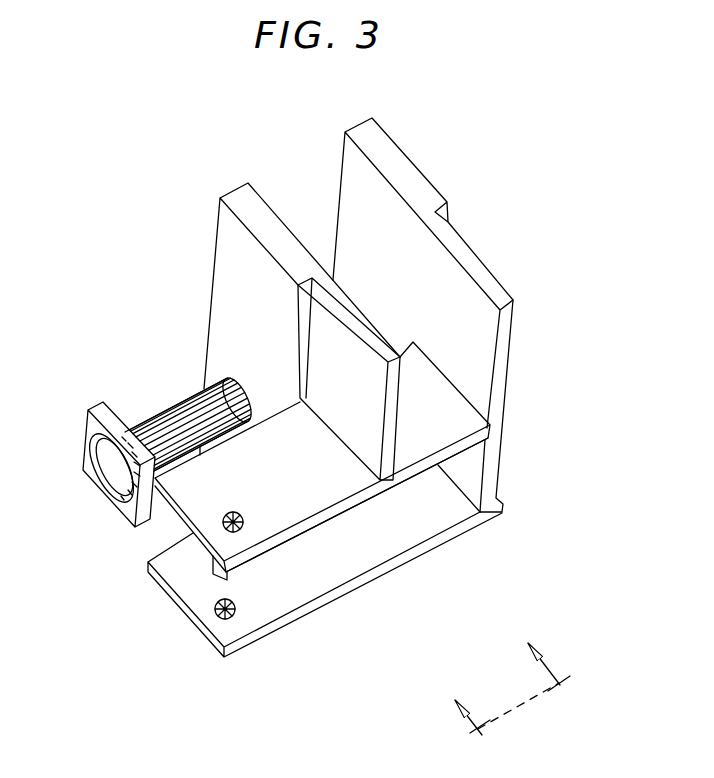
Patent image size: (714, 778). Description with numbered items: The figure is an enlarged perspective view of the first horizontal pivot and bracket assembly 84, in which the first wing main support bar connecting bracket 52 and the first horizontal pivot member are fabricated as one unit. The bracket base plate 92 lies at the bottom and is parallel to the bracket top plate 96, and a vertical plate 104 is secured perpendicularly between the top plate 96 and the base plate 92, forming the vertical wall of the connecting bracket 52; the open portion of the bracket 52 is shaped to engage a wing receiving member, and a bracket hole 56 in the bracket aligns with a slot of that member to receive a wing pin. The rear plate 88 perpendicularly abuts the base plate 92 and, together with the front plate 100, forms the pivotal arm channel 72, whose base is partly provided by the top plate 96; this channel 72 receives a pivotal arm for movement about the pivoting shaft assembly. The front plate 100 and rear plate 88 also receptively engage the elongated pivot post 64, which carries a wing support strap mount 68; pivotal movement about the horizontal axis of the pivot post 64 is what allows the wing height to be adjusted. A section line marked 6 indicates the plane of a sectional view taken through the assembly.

The first wing main support bar connecting bracket 52 is at (400, 542).
The bracket hole 56 is at (222, 622).
The elongated pivot post 64 is at (173, 403).
The wing support strap mount 68 is at (85, 406).
The pivotal arm channel 72 is at (277, 170).
The first horizontal pivot and bracket assembly 84 is at (500, 150).
The rear plate 88 is at (522, 300).
The bracket base plate 92 is at (278, 623).
The bracket top plate 96 is at (326, 527).
The front plate 100 is at (413, 368).
The vertical plate 104 is at (212, 567).
The section line 6- 6 is at (518, 707).